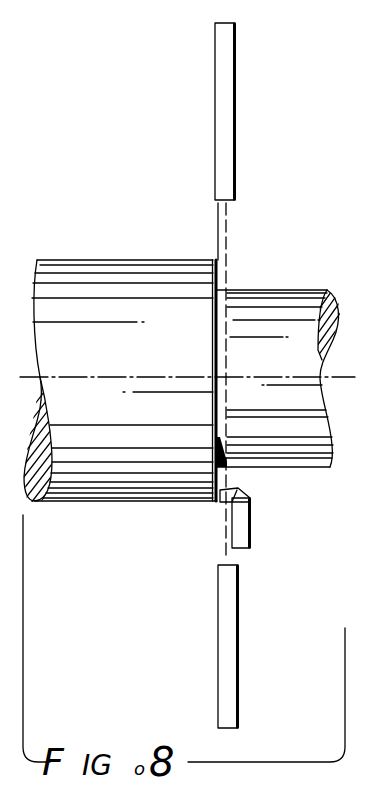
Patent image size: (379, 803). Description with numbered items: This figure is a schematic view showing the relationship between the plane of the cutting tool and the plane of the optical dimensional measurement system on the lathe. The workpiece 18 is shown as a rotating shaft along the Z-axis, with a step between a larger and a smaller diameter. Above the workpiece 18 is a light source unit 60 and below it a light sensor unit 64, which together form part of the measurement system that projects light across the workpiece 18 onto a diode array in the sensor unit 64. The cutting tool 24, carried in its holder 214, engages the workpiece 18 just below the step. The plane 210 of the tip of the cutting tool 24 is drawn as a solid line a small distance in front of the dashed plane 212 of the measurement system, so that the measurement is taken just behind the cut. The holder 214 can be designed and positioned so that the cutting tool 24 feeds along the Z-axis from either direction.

The workpiece 18 is at (87, 267).
The light source unit 60 is at (267, 80).
The light sensor unit 64 is at (262, 618).
The cutting tool 24 is at (233, 487).
The plane of the tip of the cutting tool 210 is at (213, 216).
The plane of the measurement system 212 is at (233, 216).
The holder 214 is at (252, 537).